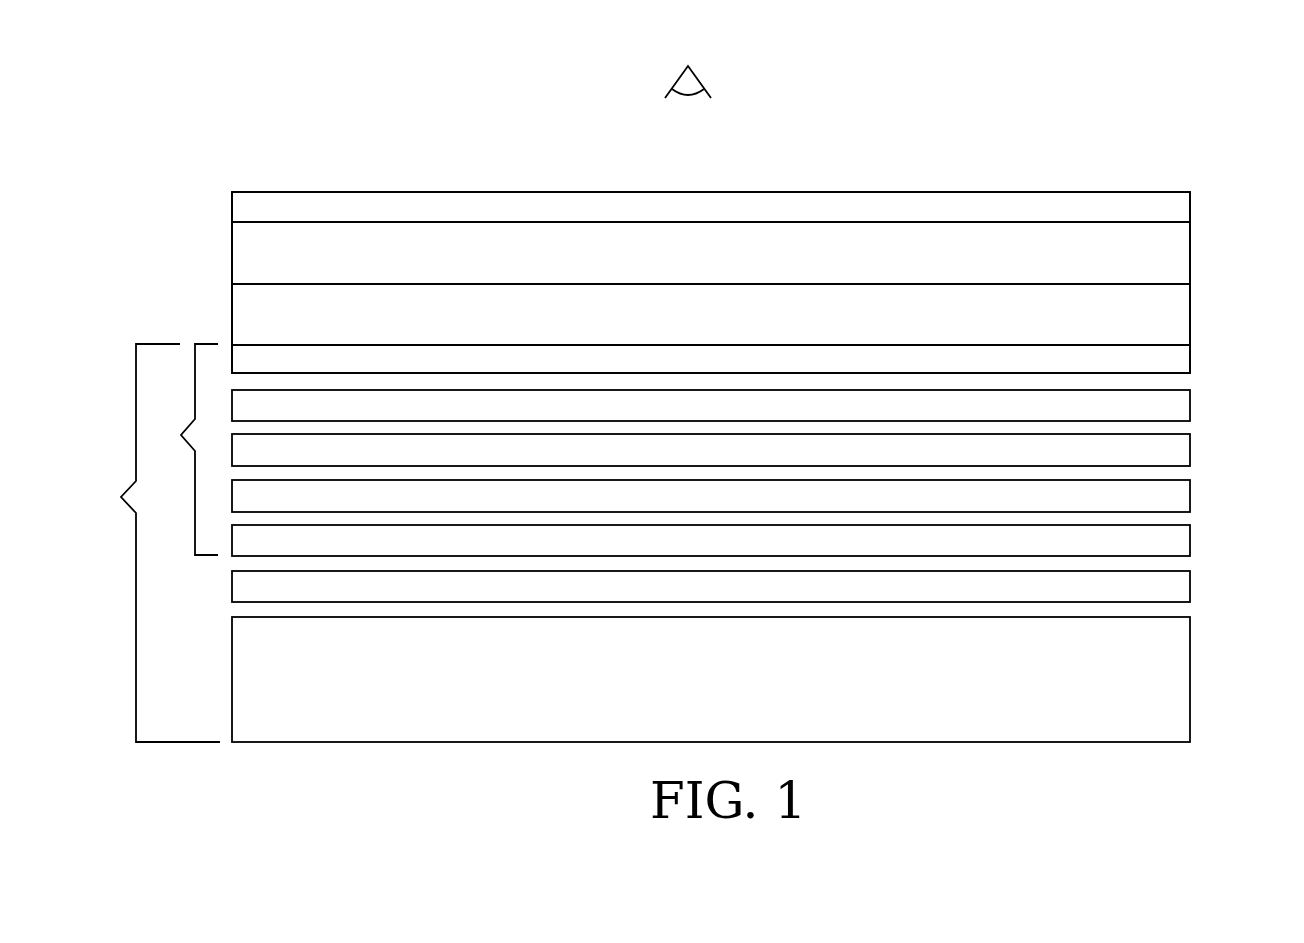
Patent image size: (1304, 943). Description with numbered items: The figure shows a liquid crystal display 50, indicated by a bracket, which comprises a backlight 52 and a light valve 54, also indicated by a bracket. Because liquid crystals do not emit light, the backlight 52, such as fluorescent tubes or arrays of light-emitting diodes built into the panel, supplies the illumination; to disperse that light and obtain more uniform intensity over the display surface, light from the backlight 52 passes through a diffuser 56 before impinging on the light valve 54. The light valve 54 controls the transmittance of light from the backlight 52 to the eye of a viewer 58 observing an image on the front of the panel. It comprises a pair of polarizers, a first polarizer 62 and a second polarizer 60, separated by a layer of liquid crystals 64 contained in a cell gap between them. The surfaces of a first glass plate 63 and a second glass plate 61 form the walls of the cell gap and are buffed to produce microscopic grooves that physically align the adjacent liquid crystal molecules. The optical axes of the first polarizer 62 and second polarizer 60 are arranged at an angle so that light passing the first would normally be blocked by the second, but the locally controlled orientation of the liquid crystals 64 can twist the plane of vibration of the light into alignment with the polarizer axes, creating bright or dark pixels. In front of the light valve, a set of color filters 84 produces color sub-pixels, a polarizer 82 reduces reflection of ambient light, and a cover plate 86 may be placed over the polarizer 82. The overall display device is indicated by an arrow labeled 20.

The display device 20 is at (205, 262).
The liquid crystal display 50 is at (153, 543).
The backlight 52 is at (1191, 681).
The light valve 54 is at (185, 449).
The diffuser 56 is at (1191, 589).
The viewer 58 is at (710, 75).
The second polarizer 60 is at (1191, 354).
The second glass plate 61 is at (1191, 498).
The first polarizer 62 is at (1191, 543).
The first glass plate 63 is at (1191, 409).
The layer of liquid crystals 64 is at (1191, 453).
The polarizer 82 is at (1191, 256).
The color filters 84 is at (1191, 316).
The cover plate 86 is at (1191, 200).